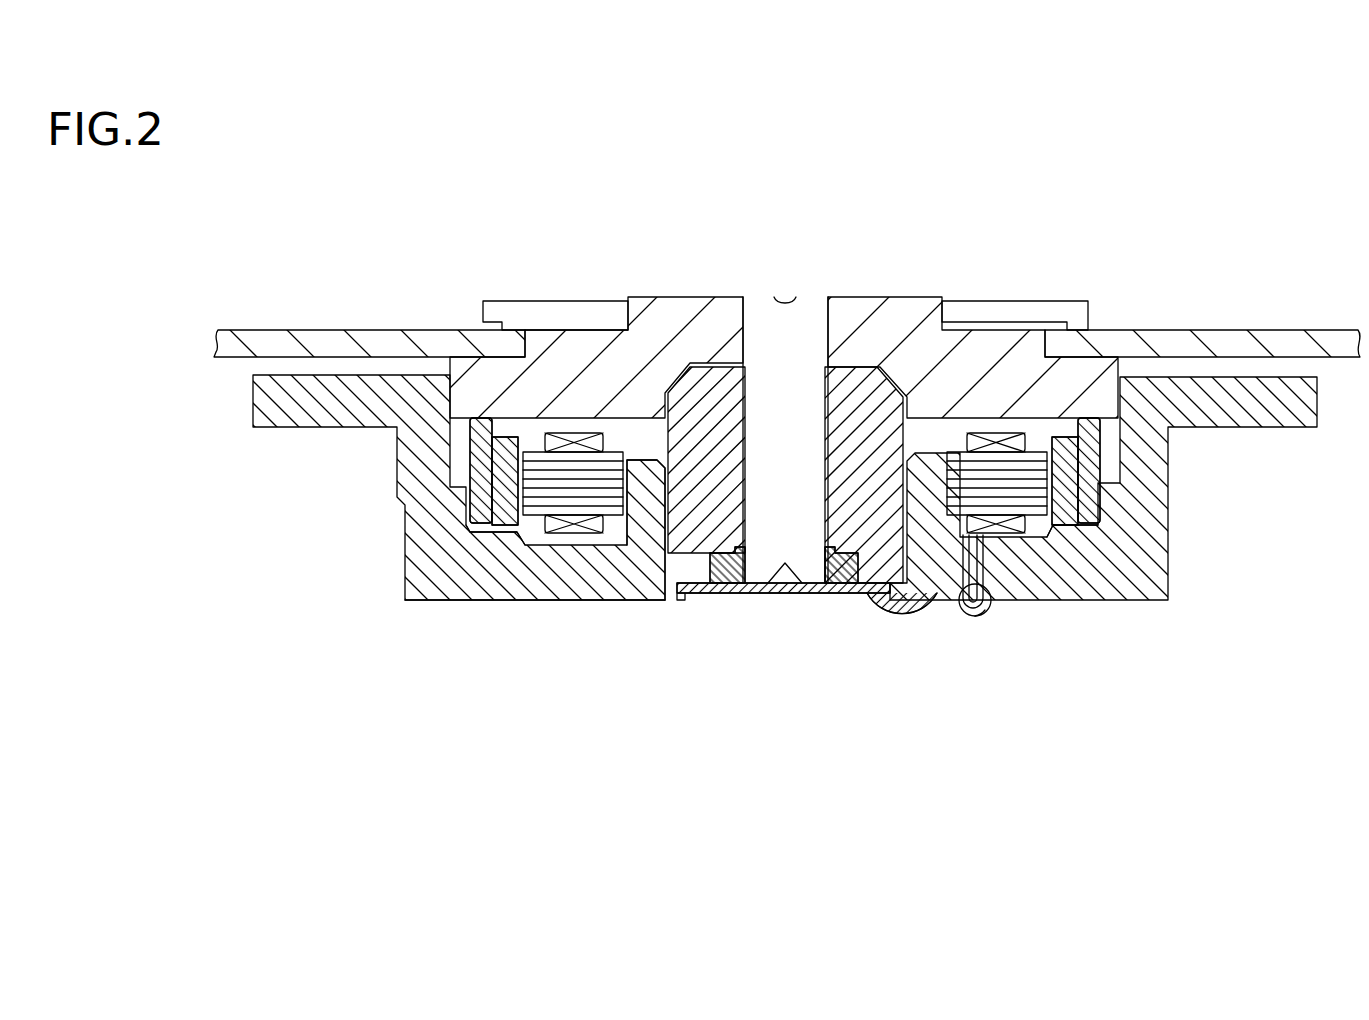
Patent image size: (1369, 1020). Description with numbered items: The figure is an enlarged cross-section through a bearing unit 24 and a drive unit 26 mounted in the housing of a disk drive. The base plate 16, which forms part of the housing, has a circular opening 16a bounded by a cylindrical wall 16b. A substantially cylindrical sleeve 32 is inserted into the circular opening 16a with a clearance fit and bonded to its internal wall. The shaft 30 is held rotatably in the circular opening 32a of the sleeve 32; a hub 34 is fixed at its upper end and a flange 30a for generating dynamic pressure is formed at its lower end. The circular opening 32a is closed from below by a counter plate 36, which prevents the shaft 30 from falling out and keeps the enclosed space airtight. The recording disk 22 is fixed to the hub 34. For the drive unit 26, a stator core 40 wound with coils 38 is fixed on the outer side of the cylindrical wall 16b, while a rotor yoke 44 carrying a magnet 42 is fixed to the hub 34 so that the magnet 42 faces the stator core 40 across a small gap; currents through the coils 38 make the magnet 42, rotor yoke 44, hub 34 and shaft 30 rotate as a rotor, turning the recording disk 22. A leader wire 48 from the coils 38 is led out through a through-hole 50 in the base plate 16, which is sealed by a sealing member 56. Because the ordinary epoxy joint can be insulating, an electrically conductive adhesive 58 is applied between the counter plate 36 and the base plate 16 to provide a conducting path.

The base plate 16 is at (1138, 595).
The circular opening 16a is at (668, 595).
The cylindrical wall 16b is at (640, 473).
The recording disk 22 is at (1255, 329).
The bearing unit 24 is at (866, 410).
The drive unit 26 is at (530, 528).
The shaft 30 is at (803, 323).
The flange 30a is at (840, 590).
The sleeve 32 is at (720, 385).
The circular opening 32a is at (822, 500).
The hub 34 is at (1020, 370).
The counter plate 36 is at (740, 590).
The coils 38 is at (567, 535).
The stator core 40 is at (553, 465).
The magnet 42 is at (530, 527).
The rotor yoke 44 is at (470, 505).
The leader wire 48 is at (966, 580).
The through-hole 50 is at (990, 612).
The sealing member 56 is at (985, 622).
The electrically conductive adhesive 58 is at (913, 612).